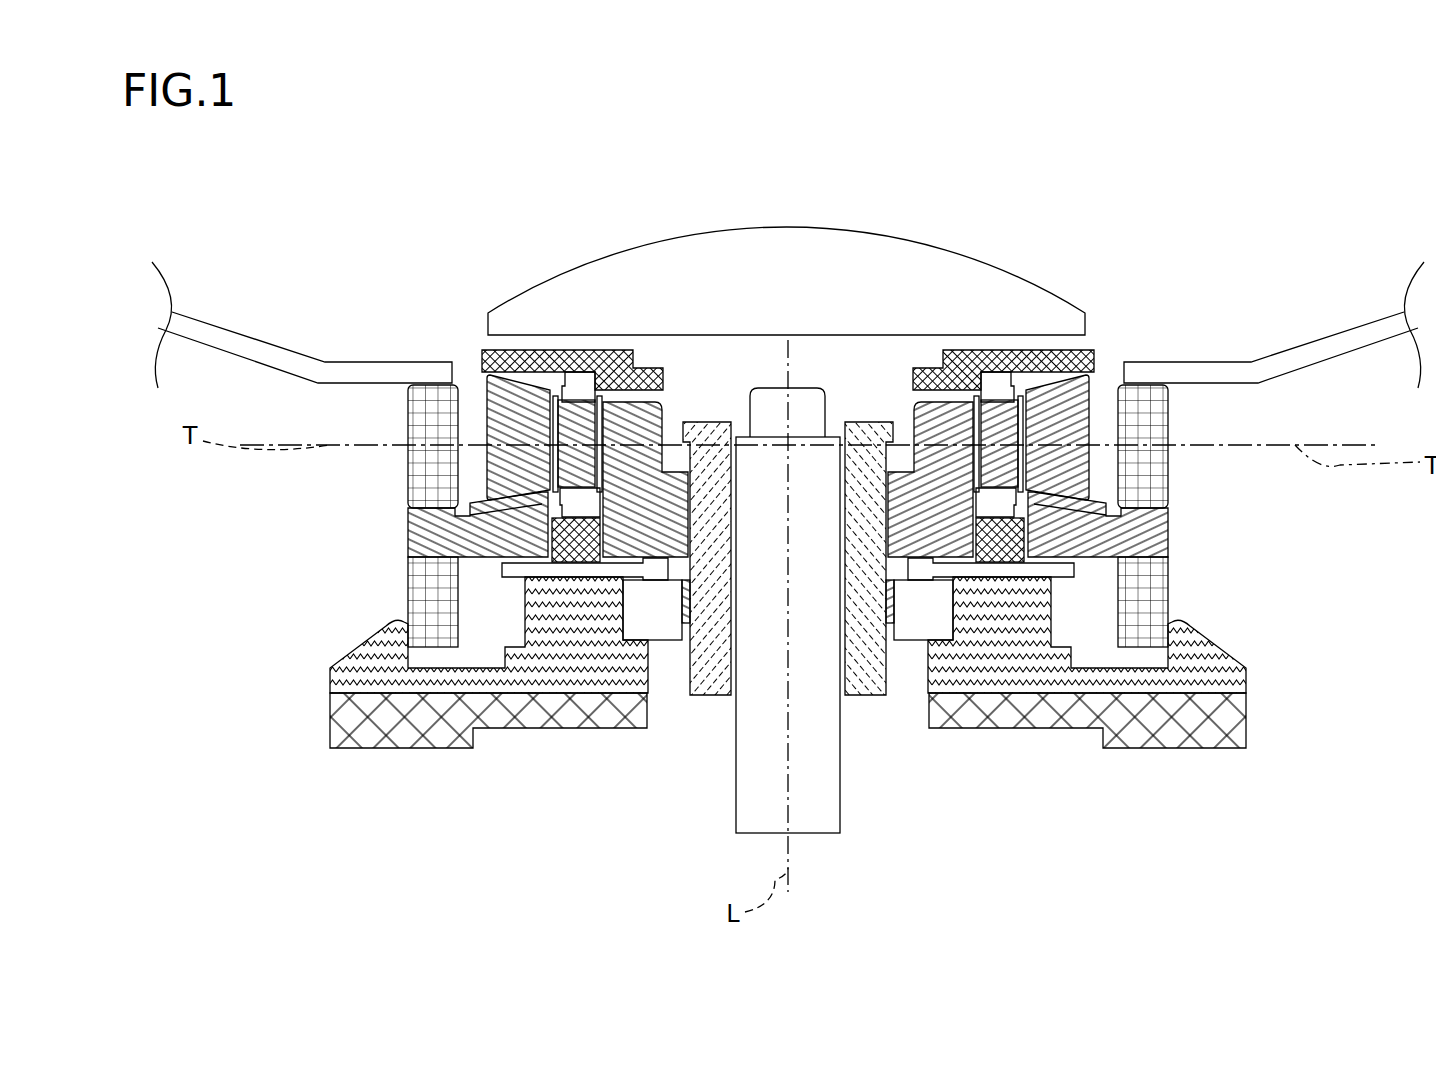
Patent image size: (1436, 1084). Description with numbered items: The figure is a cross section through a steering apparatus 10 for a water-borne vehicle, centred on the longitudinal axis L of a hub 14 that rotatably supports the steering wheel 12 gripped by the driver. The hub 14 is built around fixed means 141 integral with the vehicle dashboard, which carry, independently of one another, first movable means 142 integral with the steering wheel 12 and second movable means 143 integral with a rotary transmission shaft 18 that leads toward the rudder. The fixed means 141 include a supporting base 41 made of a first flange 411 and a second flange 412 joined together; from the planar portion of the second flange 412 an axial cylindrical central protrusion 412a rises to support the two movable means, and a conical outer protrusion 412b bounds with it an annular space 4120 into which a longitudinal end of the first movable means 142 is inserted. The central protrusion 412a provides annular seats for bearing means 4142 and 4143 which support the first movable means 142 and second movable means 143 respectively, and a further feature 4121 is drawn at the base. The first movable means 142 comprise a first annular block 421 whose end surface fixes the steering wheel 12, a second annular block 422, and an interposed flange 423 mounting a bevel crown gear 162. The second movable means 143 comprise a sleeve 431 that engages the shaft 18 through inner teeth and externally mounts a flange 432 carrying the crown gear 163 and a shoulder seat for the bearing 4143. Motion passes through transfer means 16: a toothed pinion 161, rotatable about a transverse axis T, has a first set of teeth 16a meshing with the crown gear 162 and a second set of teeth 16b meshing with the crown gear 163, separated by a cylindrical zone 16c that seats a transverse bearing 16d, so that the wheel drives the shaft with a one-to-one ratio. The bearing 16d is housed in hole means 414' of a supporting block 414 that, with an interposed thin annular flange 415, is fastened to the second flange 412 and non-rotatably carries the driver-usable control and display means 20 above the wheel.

The fan motor 10 is at (332, 266).
The steering wheel 12 is at (222, 340).
The hub 14 is at (318, 590).
The fixed means 141 is at (318, 758).
The first movable means 142 is at (1157, 475).
The second movable means 143 is at (655, 542).
The transfer means 16 is at (470, 400).
The first set of teeth 16a is at (530, 395).
The second set of teeth 16b is at (638, 405).
The cylindrical zone 16c is at (563, 373).
The bearing 16d is at (588, 385).
The toothed pinion 161 is at (512, 397).
The crown gear 162 is at (418, 512).
The crown gear 163 is at (668, 470).
The rotary shaft 18 is at (815, 805).
The means usable by the driver 20 is at (893, 250).
The supporting base 41 is at (367, 752).
The first flange 411 is at (1182, 748).
The second flange 412 is at (1033, 672).
The cylindrical central protrusion 412a is at (563, 597).
The outer protrusion 412b is at (358, 660).
The annular space 4120 is at (432, 672).
The channel side 4121 is at (517, 576).
The bearing means 4142 is at (477, 618).
The bearing means 4143 is at (677, 625).
The supporting block 414 is at (1033, 287).
The hole means 414' is at (772, 446).
The thin annular flange 415 is at (532, 572).
The first annular block 421 is at (423, 415).
The second annular block 422 is at (417, 575).
The flange 423 is at (415, 542).
The sleeve 431 is at (713, 420).
The flange 432 is at (627, 548).